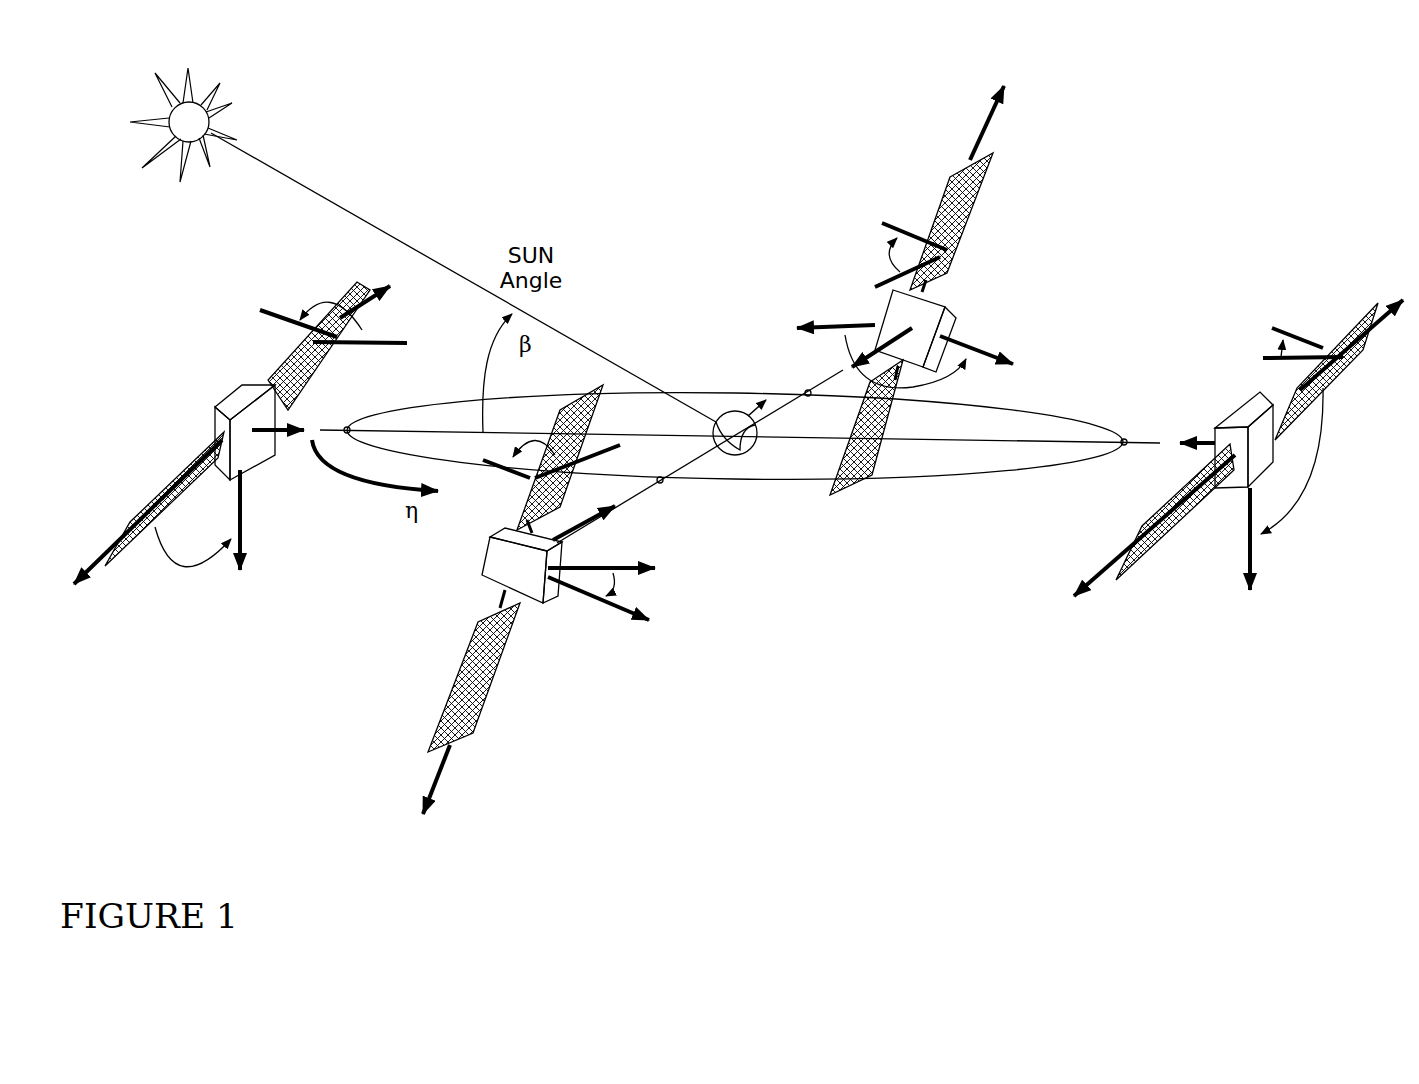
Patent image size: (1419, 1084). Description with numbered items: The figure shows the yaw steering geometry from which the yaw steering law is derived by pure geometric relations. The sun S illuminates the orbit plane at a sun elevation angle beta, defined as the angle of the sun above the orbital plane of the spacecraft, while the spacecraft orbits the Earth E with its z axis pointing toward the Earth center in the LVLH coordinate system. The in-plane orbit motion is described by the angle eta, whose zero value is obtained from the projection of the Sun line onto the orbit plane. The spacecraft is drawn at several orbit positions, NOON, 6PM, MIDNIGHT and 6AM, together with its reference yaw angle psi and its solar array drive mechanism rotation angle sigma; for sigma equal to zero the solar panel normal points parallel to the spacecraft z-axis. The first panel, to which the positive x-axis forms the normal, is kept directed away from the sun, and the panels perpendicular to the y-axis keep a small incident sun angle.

The sun S is at (183, 125).
The earth E is at (739, 427).
The satellite at noon orbit position NOON is at (249, 431).
The satellite at 6 PM orbit position 6PM is at (557, 543).
The satellite at 6 AM orbit position 6AM is at (896, 290).
The satellite at midnight orbit position MIDNIGHT is at (1219, 441).